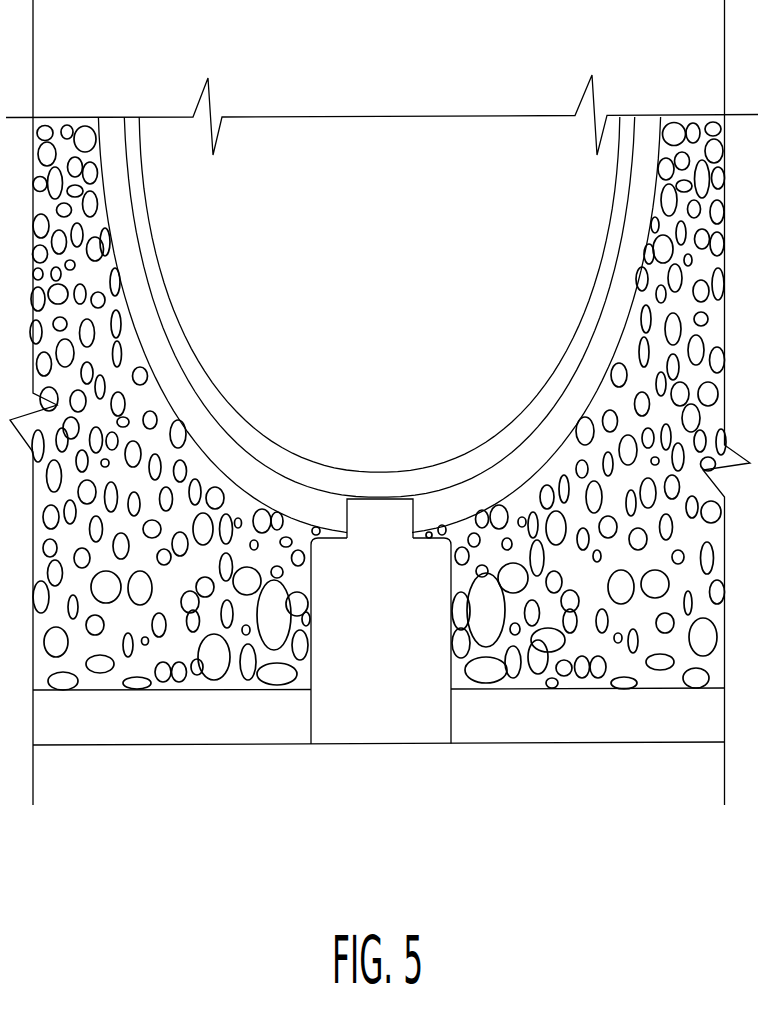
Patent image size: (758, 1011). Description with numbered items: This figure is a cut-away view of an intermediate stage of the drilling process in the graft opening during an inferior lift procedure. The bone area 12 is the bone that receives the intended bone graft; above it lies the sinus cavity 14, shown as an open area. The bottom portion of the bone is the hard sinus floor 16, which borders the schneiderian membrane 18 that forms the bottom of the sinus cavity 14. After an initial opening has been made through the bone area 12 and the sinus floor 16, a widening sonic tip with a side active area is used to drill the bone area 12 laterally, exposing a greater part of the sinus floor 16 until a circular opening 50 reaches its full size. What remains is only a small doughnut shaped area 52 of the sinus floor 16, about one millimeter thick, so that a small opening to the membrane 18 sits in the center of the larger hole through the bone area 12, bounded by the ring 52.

The bone area 12 is at (625, 482).
The sinus cavity 14 is at (368, 217).
The sinus floor 16 is at (244, 467).
The schneiderian membrane 18 is at (188, 347).
The circular opening 50 is at (387, 695).
The doughnut shaped area 52 is at (420, 512).